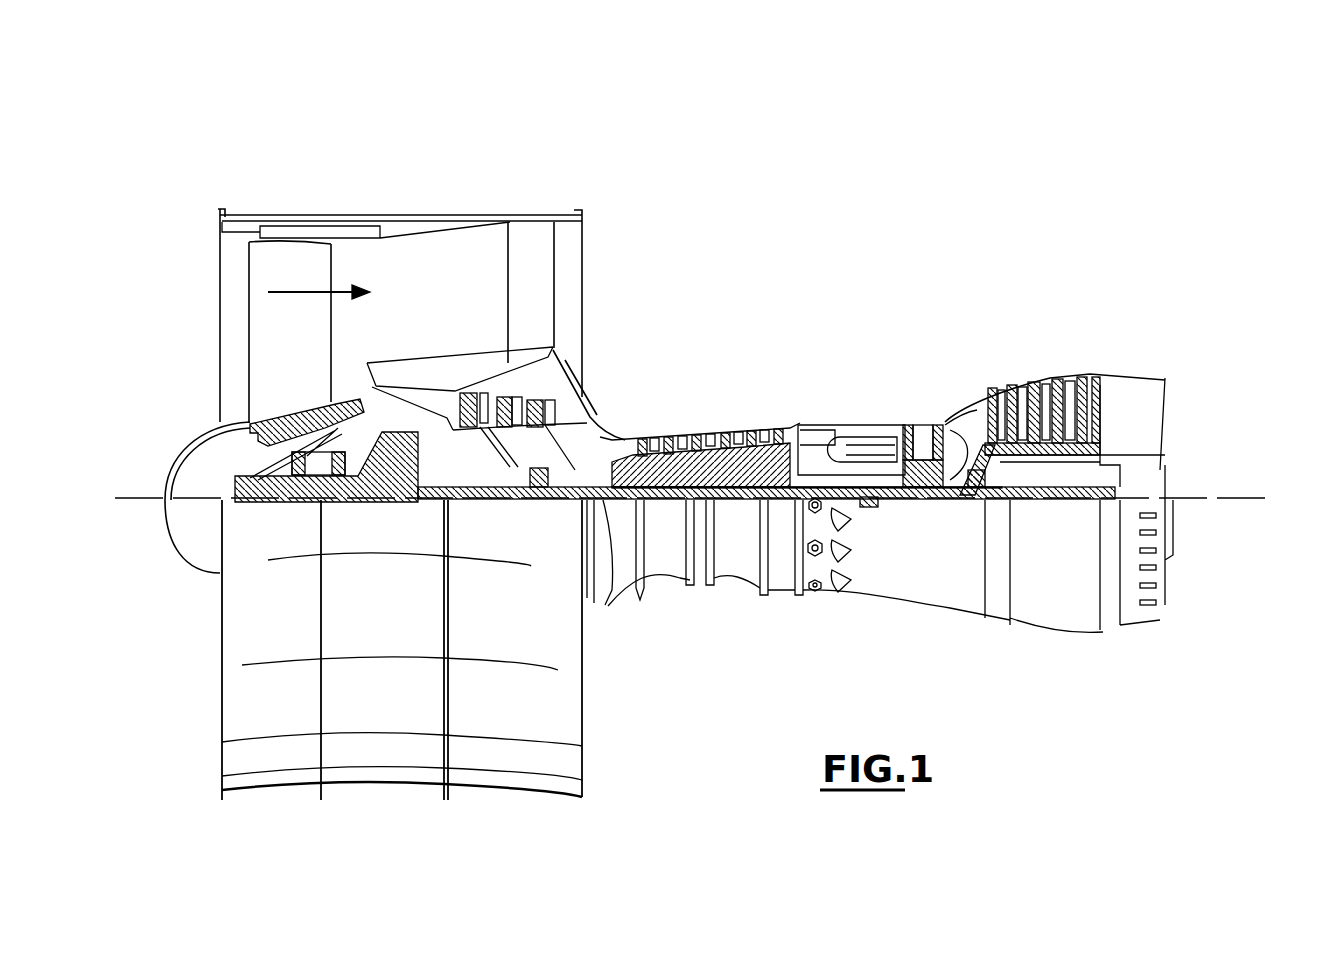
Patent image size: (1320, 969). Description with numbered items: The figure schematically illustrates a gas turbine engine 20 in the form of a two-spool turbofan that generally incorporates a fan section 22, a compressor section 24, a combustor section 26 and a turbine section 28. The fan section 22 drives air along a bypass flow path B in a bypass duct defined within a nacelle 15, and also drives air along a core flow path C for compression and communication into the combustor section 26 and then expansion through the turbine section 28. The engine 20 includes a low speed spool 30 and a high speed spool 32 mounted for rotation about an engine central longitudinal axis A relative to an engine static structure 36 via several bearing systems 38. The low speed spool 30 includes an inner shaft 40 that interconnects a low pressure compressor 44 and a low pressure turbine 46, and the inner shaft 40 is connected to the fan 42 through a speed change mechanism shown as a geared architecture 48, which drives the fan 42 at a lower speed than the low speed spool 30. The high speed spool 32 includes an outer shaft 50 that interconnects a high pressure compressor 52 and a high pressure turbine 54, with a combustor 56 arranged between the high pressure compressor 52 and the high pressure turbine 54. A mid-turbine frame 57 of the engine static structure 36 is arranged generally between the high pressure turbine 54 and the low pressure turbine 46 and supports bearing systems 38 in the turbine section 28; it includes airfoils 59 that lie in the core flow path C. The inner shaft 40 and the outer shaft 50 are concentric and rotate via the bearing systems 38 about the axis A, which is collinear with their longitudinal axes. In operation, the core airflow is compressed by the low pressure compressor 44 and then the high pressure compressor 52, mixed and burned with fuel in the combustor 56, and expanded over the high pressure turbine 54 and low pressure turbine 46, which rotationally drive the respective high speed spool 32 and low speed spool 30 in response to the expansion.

The nacelle 15 is at (403, 223).
The gas turbine engine 20 is at (862, 270).
The fan section 22 is at (330, 206).
The compressor section 24 is at (636, 403).
The combustor section 26 is at (858, 390).
The turbine section 28 is at (1007, 350).
The low speed spool 30 is at (740, 512).
The high speed spool 32 is at (780, 440).
The engine static structure 36 is at (780, 597).
The bearing systems 38 is at (541, 482).
The inner shaft 40 is at (612, 598).
The fan 42 is at (306, 348).
The low pressure compressor 44 is at (503, 407).
The low pressure turbine 46 is at (1047, 390).
The geared architecture 48 is at (408, 484).
The outer shaft 50 is at (864, 500).
The high pressure compressor 52 is at (715, 470).
The high pressure turbine 54 is at (923, 420).
The combustor 56 is at (857, 447).
The mid-turbine frame 57 is at (966, 400).
The airfoils 59 is at (1000, 470).
The engine central longitudinal axis A is at (1253, 500).
The bypass flow path B is at (304, 288).
The core flow path C is at (396, 396).